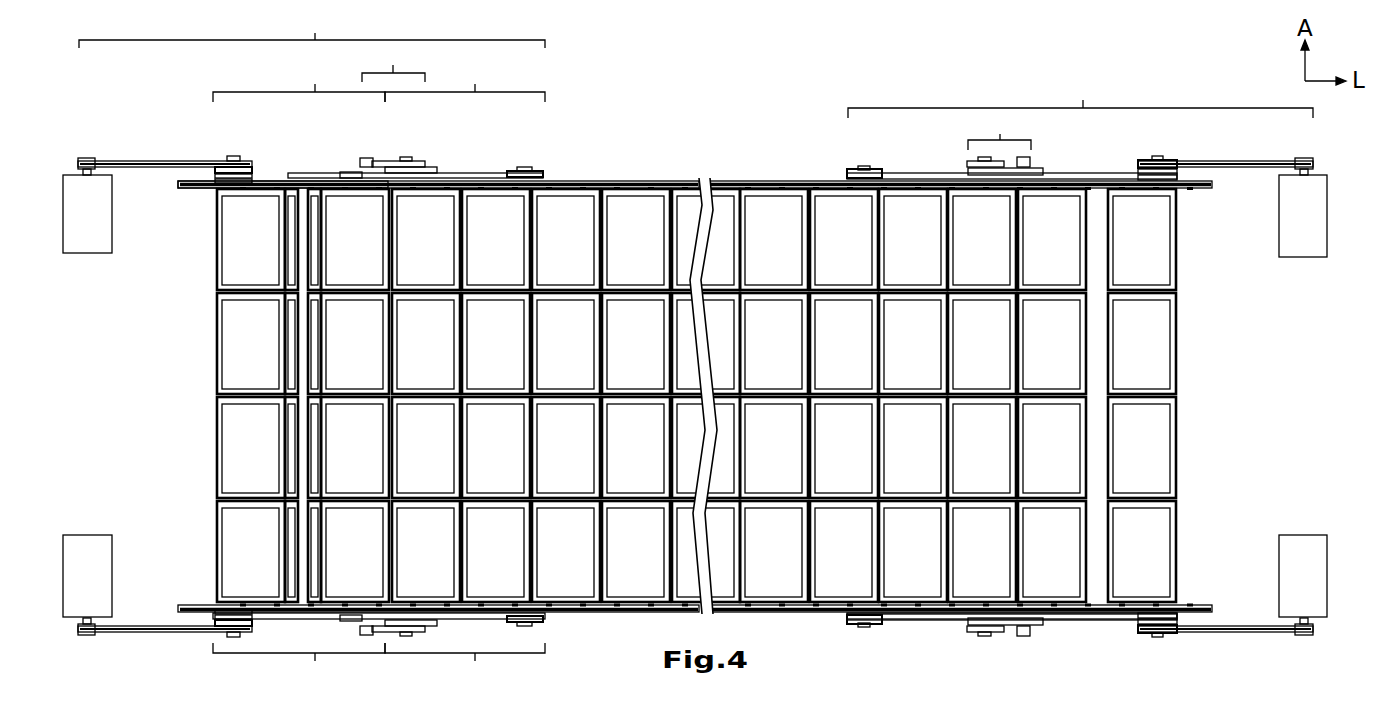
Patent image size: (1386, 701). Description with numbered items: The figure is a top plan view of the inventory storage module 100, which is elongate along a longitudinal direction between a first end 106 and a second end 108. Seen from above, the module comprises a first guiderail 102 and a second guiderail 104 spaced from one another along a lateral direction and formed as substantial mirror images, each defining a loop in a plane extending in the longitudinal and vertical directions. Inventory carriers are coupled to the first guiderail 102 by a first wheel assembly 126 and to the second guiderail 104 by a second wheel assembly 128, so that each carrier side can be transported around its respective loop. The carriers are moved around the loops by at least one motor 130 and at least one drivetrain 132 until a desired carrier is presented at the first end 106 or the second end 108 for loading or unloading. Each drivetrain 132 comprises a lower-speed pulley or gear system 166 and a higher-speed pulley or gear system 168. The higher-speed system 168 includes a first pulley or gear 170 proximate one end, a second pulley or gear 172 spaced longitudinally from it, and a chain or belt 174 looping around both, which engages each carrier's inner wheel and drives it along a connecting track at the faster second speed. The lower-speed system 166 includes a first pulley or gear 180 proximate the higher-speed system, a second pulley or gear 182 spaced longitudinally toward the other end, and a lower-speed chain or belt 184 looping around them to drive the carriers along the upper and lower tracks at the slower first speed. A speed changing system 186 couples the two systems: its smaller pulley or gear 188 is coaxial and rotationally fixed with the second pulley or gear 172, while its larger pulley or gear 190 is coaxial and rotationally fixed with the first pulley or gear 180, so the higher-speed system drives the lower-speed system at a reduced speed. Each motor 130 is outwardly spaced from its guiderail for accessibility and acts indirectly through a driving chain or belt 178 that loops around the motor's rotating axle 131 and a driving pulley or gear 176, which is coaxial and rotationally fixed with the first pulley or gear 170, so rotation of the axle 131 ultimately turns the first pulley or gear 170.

The inventory storage module 100 is at (688, 111).
The first guiderail 102 is at (630, 612).
The second guiderail 104 is at (620, 182).
The first end 106 is at (1099, 637).
The second end 108 is at (246, 666).
The first wheel assembly 126 is at (793, 612).
The second wheel assembly 128 is at (758, 182).
The motor 130 is at (103, 238).
The rotating axle 131 is at (82, 158).
The drivetrain 132 is at (696, 63).
The lower-speed pulley or gear system 166 is at (465, 374).
The higher-speed pulley or gear system 168 is at (299, 374).
The first pulley or gear 170 is at (253, 176).
The second pulley or gear 172 is at (352, 172).
The chain or belt 174 is at (293, 181).
The driving pulley or gear 176 is at (219, 167).
The driving chain or belt 178 is at (160, 160).
The first pulley or gear 180 is at (425, 170).
The second pulley or gear 182 is at (543, 176).
The lower-speed chain or belt 184 is at (492, 172).
The speed changing system 186 is at (701, 108).
The smaller pulley or gear 188 is at (370, 160).
The larger pulley or gear 190 is at (420, 160).